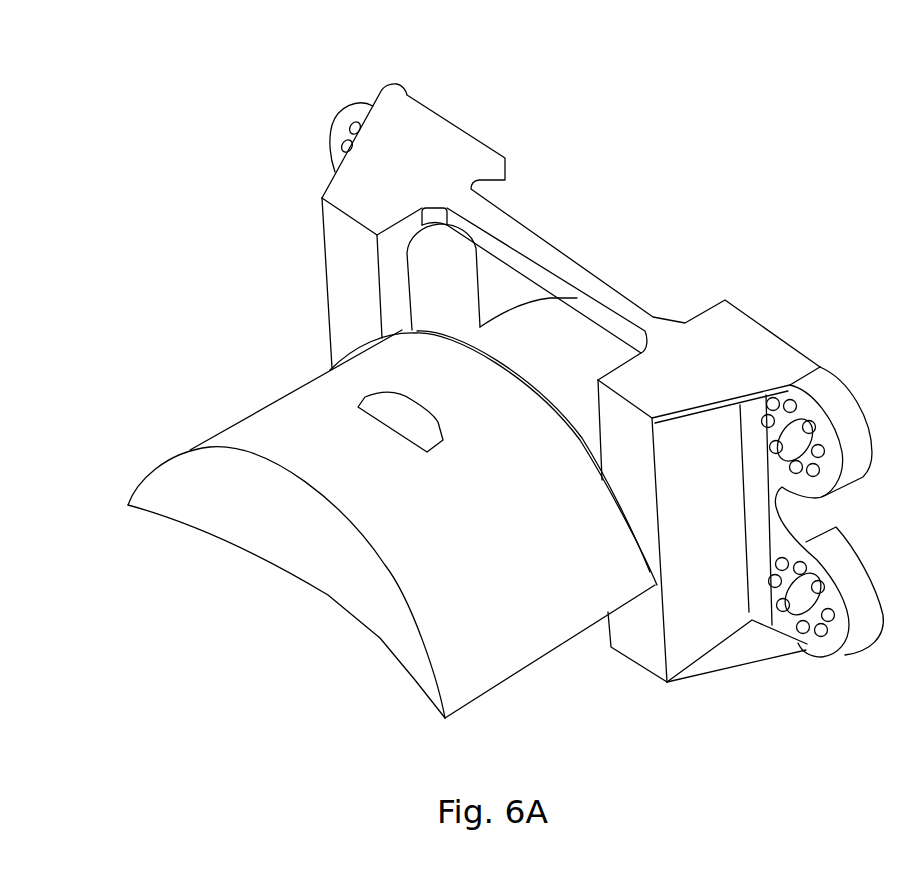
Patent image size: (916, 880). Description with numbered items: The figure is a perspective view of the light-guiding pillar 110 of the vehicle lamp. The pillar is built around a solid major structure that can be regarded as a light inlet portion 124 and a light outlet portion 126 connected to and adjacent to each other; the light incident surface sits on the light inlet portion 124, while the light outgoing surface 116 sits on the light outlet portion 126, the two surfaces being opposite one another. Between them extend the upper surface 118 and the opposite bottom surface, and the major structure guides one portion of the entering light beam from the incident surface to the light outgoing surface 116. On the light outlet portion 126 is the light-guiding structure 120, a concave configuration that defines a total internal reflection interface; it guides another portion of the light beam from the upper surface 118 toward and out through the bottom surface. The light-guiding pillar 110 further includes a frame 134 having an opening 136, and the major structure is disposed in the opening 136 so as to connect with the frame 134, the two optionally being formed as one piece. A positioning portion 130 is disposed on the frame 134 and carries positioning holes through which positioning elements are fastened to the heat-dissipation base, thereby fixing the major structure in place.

The light-guiding pillar 110 is at (70, 70).
The light outgoing surface 116 is at (280, 503).
The upper surface 118 is at (457, 642).
The light-guiding structure 120 is at (377, 405).
The light inlet portion 124 is at (580, 343).
The light outlet portion 126 is at (257, 432).
The positioning portion 130 is at (782, 355).
The frame 134 is at (633, 293).
The opening 136 is at (504, 260).